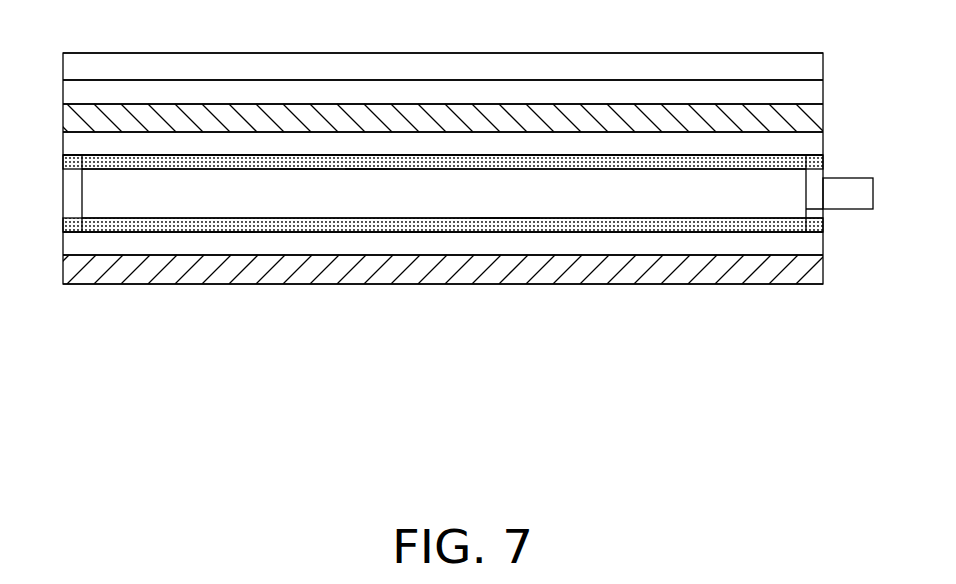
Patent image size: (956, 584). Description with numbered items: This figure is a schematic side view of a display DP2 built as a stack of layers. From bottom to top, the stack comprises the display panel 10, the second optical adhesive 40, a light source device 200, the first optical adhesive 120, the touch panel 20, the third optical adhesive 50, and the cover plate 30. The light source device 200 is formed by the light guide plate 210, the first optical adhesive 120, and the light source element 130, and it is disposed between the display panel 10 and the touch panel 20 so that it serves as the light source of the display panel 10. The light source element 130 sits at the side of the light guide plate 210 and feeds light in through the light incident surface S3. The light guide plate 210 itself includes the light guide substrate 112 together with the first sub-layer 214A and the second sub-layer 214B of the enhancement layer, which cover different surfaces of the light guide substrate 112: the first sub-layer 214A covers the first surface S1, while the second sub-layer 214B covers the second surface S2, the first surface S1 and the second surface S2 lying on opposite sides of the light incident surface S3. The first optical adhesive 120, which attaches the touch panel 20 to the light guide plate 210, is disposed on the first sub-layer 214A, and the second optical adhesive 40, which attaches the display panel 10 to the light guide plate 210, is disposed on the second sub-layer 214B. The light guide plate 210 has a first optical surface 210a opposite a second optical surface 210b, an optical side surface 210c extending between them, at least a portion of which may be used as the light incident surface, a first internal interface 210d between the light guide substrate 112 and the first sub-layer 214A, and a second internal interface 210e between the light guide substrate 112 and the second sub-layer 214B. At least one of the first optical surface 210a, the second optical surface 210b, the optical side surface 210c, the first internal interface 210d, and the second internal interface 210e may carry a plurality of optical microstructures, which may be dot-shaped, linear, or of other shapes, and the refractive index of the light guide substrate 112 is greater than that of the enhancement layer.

The display panel 10 is at (817, 269).
The touch panel 20 is at (817, 118).
The cover plate 30 is at (817, 66).
The second optical adhesive 40 is at (818, 243).
The third optical adhesive 50 is at (814, 92).
The light guide substrate 112 is at (647, 200).
The first optical adhesive 120 is at (818, 146).
The light source element 130 is at (876, 193).
The light source device 200 is at (55, 132).
The light guide plate 210 is at (443, 297).
The first optical surface 210a is at (489, 150).
The second optical surface 210b is at (423, 237).
The optical side surface 210c is at (82, 193).
The first internal interface 210d is at (308, 174).
The second internal interface 210e is at (233, 222).
The first sub-layer 214A is at (603, 160).
The second sub-layer 214B is at (698, 225).
The first surface S1 is at (368, 174).
The second surface S2 is at (521, 214).
The light incident surface S3 is at (827, 213).
The display DP2 is at (797, 470).